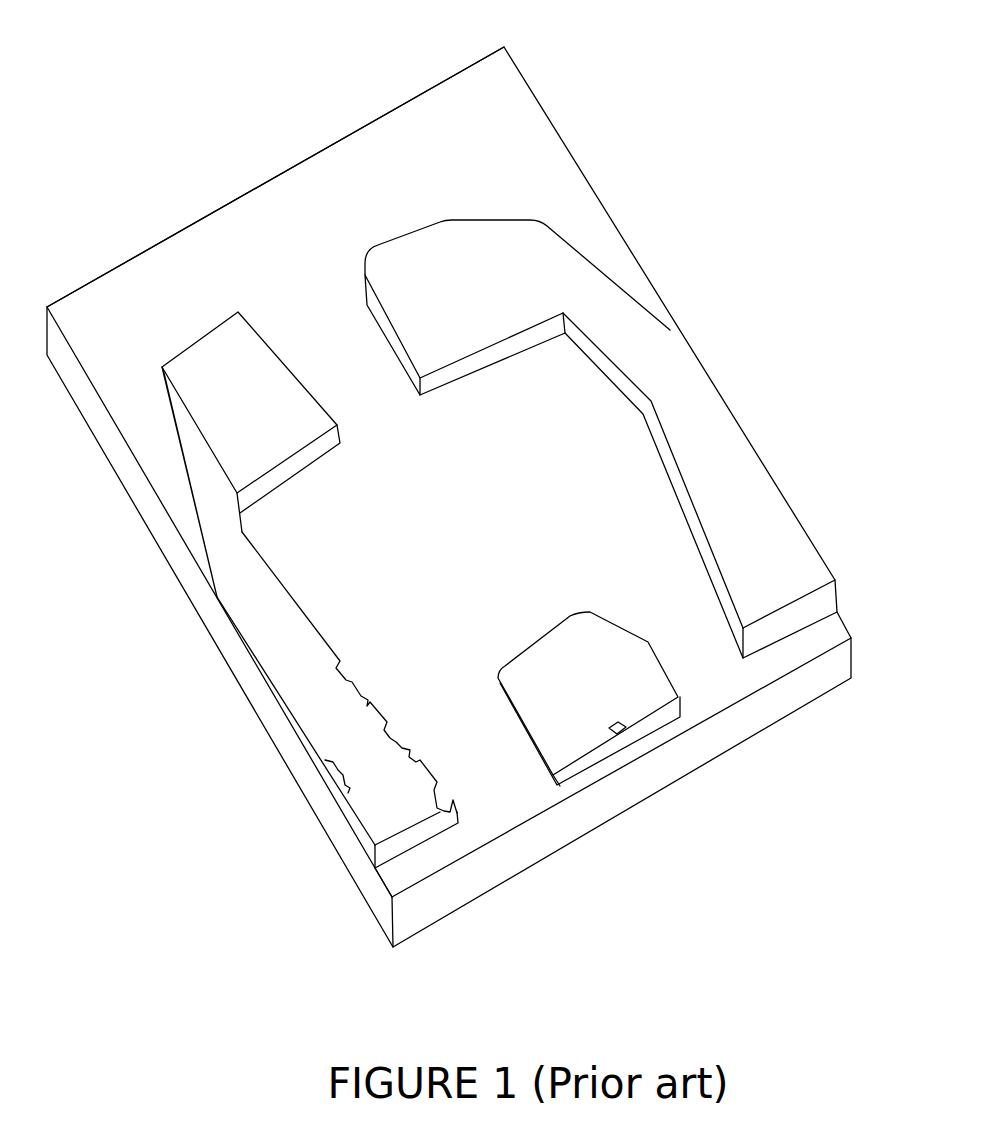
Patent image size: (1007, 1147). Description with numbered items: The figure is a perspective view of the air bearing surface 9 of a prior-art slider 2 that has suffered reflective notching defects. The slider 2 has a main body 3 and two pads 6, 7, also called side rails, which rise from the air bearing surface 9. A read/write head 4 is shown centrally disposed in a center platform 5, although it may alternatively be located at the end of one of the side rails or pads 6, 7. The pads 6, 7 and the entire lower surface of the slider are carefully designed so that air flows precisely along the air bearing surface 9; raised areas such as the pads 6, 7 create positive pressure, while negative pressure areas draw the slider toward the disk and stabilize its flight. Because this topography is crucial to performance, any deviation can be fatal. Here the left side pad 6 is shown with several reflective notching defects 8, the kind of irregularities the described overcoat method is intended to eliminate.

The slider 2 is at (584, 150).
The main body 3 is at (343, 163).
The read/write head 4 is at (618, 733).
The center platform 5 is at (576, 684).
The left side pad 6 is at (387, 710).
The pad 7 is at (718, 598).
The reflective notching defects 8 is at (448, 806).
The air bearing surface 9 is at (264, 248).